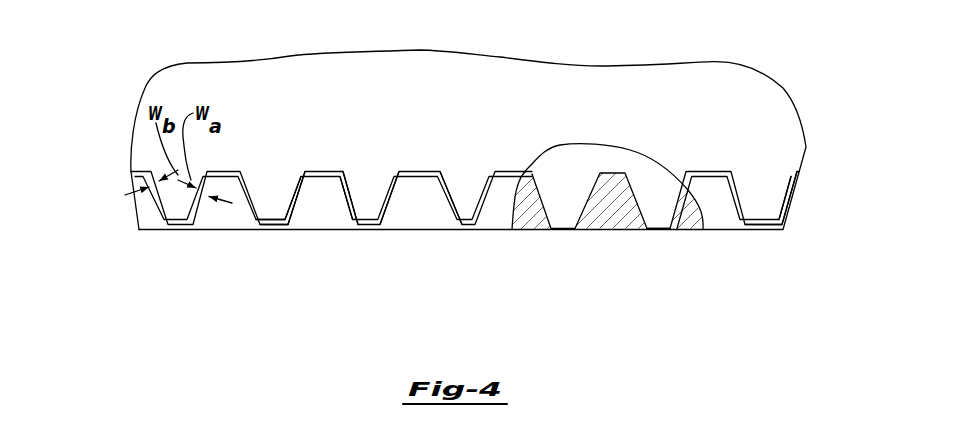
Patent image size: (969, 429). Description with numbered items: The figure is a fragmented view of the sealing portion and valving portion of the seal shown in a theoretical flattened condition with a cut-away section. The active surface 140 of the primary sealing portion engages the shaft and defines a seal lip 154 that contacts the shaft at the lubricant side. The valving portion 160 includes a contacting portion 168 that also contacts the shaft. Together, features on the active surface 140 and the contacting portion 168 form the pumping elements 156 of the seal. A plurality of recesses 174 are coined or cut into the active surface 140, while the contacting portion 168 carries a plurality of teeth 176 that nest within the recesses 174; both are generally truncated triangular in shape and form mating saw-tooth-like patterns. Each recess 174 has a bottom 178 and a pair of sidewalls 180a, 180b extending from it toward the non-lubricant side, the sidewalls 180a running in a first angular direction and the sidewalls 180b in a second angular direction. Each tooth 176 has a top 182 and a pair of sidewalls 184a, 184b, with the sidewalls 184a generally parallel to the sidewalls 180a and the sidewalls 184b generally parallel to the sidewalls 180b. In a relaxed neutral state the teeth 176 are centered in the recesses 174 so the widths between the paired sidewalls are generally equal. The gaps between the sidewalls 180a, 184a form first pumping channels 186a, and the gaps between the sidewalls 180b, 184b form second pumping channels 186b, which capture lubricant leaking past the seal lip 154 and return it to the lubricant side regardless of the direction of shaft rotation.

The active surface 140 is at (150, 221).
The seal lip 154 is at (157, 230).
The pumping elements 156 is at (532, 156).
The valving portion 160 is at (805, 147).
The contacting portion 168 is at (762, 198).
The recesses 174 is at (656, 206).
The teeth 176 is at (755, 204).
The bottom 178 is at (274, 230).
The sidewalls 180a is at (310, 197).
The sidewalls 180b is at (360, 205).
The top 182 is at (276, 221).
The sidewalls 184a is at (306, 205).
The sidewalls 184b is at (340, 196).
The pumping channels 186a is at (395, 190).
The pumping channels 186b is at (441, 186).